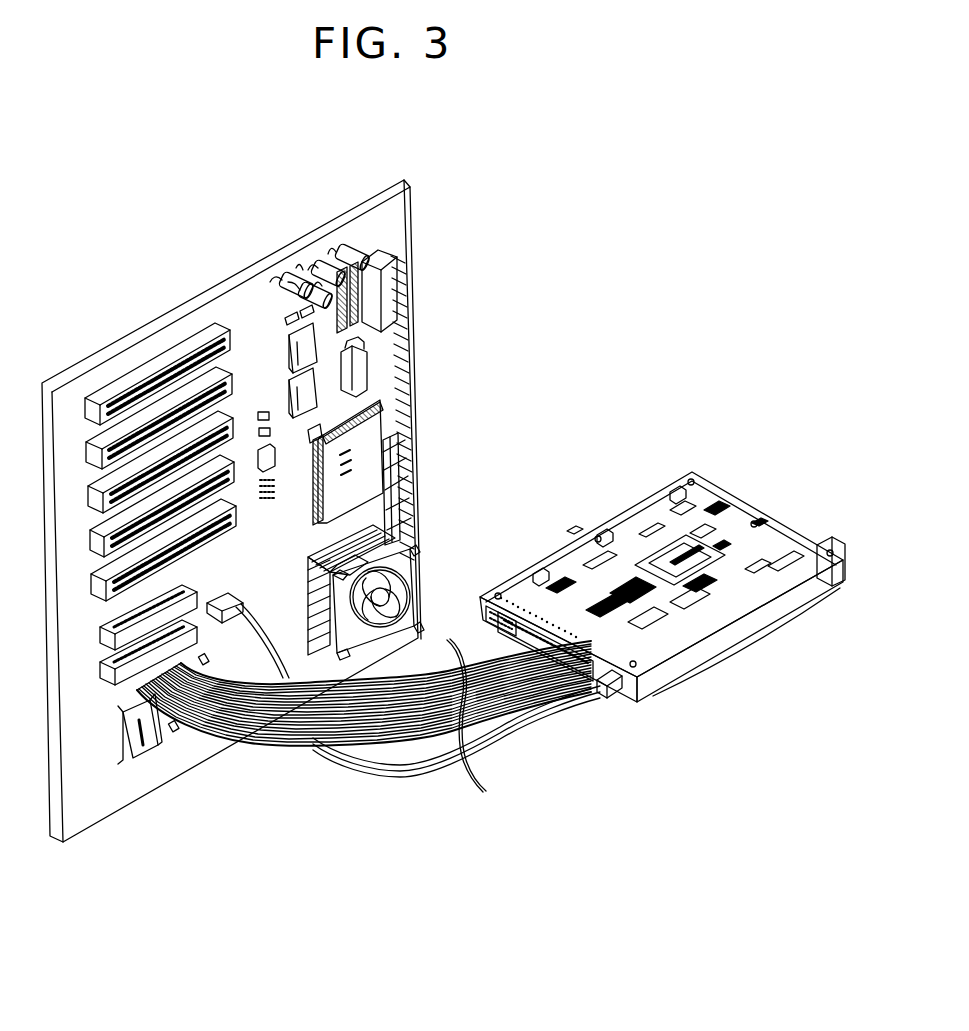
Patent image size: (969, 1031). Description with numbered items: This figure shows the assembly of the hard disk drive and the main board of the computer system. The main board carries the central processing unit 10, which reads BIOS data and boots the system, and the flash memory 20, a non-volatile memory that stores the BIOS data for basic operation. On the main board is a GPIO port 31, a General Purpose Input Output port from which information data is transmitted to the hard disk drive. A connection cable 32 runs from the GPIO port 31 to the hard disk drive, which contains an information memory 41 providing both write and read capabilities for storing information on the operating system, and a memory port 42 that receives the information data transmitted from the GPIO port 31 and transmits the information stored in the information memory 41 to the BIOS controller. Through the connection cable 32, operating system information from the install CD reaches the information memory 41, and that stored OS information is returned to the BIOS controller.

The central processing unit 10 is at (392, 530).
The flash memory 20 is at (312, 390).
The GPIO port 31 is at (212, 628).
The connection cable 32 is at (400, 777).
The information memory 41 is at (672, 640).
The memory port 42 is at (610, 692).